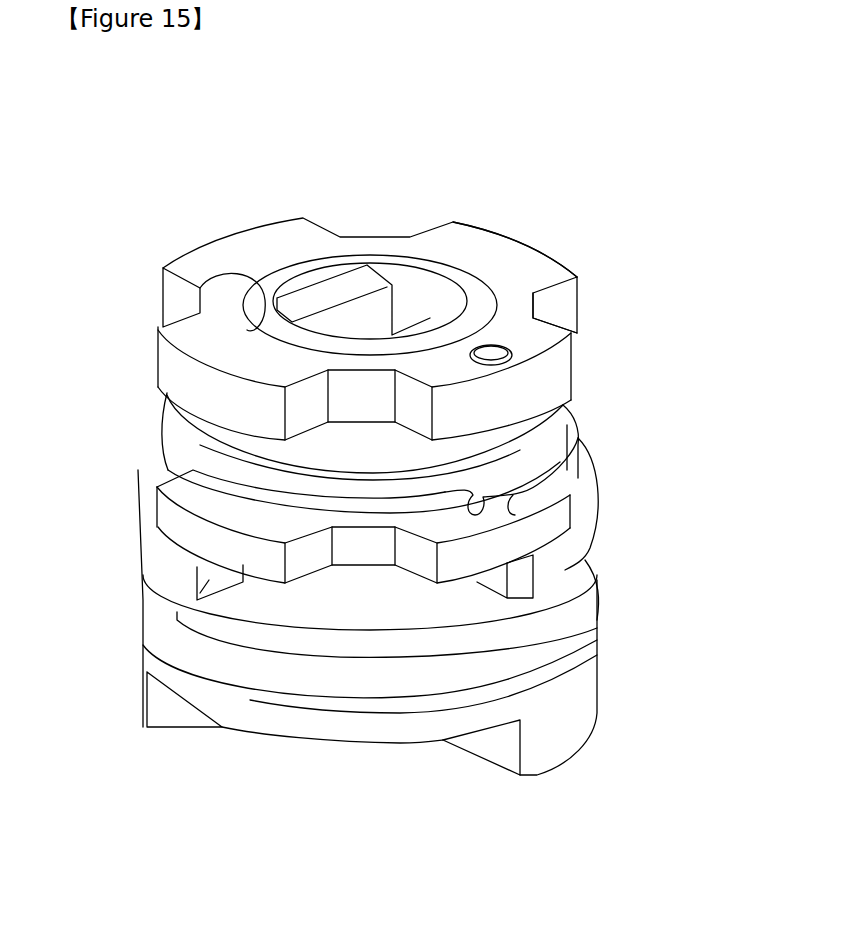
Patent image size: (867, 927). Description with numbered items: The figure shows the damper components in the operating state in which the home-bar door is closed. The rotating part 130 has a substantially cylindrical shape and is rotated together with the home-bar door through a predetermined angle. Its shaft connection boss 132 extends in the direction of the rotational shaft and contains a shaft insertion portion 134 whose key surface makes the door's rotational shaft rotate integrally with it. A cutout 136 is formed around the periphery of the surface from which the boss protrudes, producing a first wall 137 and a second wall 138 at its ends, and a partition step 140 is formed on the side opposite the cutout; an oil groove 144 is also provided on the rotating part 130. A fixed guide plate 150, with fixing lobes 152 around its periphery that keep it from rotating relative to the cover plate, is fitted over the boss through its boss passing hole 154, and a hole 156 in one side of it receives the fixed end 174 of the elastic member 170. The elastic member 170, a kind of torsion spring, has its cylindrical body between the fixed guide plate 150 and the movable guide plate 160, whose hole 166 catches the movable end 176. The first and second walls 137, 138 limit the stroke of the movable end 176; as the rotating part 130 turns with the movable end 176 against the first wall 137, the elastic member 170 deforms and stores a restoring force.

The fixed guide plate 150 is at (367, 297).
The fixing lobes 152 is at (505, 258).
The boss passing hole 154 is at (200, 288).
The hole 156 is at (510, 357).
The shaft connection boss 132 is at (310, 270).
The shaft insertion portion 134 is at (417, 297).
The fixed end 174 is at (493, 352).
The elastic member 170 is at (421, 506).
The hole 166 is at (533, 505).
The movable guide plate 160 is at (369, 546).
The first wall 137 is at (533, 578).
The second wall 138 is at (150, 588).
The rotating part 130 is at (413, 643).
The cutout 136 is at (320, 603).
The oil groove 144 is at (530, 643).
The partition step 140 is at (175, 715).
The movable end 176 is at (475, 520).